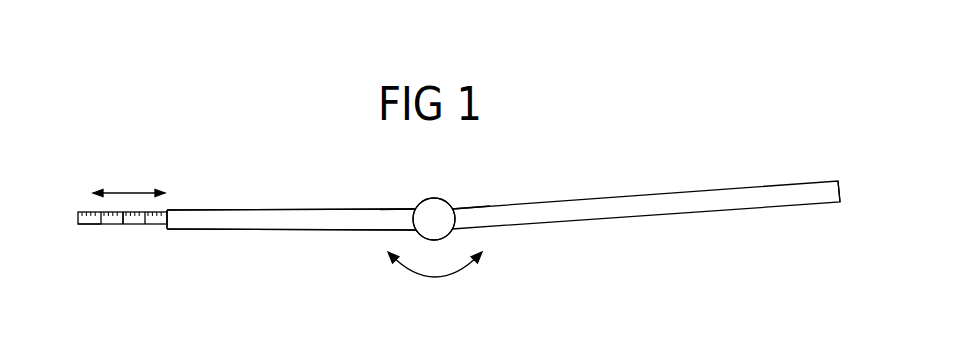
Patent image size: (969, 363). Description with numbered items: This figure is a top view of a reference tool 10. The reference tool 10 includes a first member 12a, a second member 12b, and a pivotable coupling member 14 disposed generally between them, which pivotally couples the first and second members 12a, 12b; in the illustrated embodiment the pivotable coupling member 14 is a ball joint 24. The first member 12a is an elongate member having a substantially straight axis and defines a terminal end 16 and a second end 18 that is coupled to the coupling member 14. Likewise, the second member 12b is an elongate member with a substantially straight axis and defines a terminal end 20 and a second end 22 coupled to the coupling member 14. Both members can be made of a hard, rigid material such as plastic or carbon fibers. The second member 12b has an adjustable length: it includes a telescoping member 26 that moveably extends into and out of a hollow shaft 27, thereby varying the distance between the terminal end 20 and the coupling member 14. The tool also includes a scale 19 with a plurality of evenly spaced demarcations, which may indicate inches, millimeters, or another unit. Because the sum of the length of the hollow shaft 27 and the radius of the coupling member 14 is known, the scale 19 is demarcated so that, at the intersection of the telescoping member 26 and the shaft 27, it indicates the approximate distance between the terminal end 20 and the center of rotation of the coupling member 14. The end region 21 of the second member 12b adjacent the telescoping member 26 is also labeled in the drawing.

The reference tool 10 is at (445, 202).
The first member 12a is at (667, 218).
The second member 12b is at (285, 208).
The pivotable coupling member 14 is at (453, 198).
The terminal end 16 is at (828, 180).
The second end 18 is at (478, 205).
The scale 19 is at (95, 226).
The terminal end 20 is at (84, 212).
The end of second arm 21 is at (167, 210).
The second end 22 is at (403, 208).
The ball joint 24 is at (431, 203).
The telescoping member 26 is at (125, 224).
The hollow shaft 27 is at (270, 220).